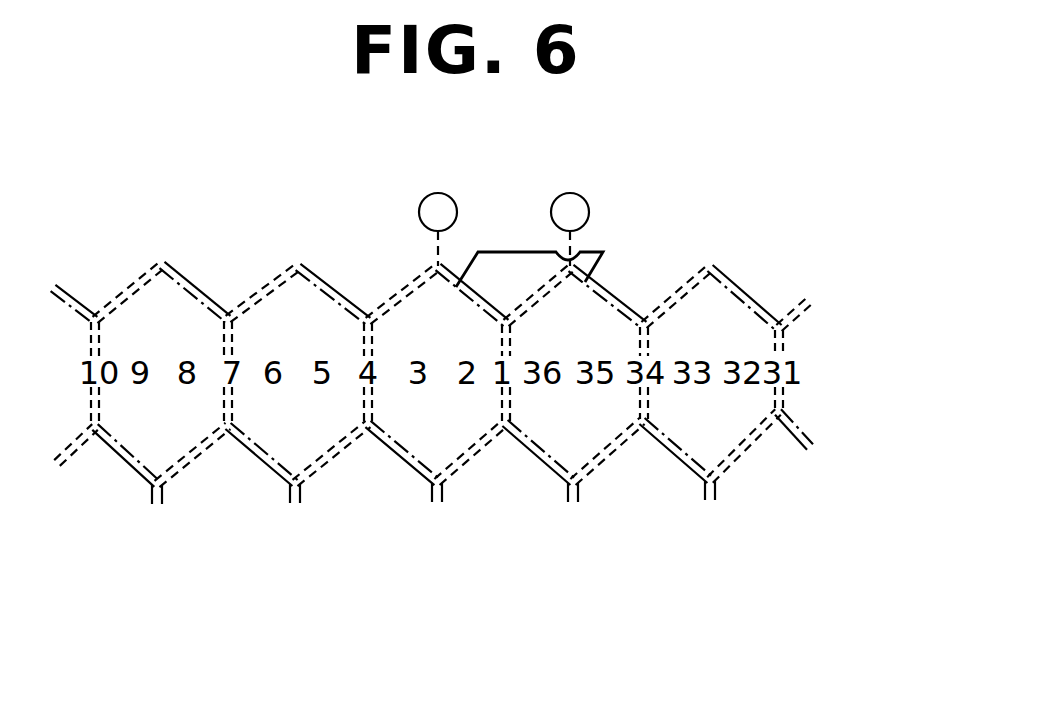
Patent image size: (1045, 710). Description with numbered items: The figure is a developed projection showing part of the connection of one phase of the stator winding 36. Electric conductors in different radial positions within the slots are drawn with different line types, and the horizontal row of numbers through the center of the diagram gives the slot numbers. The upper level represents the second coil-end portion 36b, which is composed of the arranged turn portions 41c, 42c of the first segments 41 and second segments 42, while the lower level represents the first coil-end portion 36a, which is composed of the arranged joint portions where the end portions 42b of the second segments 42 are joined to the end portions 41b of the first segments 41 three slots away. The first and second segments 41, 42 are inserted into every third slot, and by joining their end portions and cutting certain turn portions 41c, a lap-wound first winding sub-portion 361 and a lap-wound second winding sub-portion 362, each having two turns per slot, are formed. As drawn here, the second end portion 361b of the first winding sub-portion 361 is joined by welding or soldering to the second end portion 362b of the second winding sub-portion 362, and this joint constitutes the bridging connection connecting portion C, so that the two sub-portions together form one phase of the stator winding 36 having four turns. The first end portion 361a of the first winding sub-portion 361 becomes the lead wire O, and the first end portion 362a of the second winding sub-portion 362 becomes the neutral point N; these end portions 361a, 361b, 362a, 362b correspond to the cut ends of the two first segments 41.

The first segment 41 is at (130, 282).
The second segment 42 is at (200, 280).
The end portion of the first segment 41b is at (165, 491).
The end portion of the second segment 42b is at (248, 527).
The turn portion of the first segment 41c is at (703, 268).
The turn portion of the second segment 42c is at (735, 279).
The stator winding 36 is at (678, 535).
The first coil-end portion 36a is at (821, 412).
The second coil-end portion 36b is at (821, 253).
The first winding sub-portion 361 is at (592, 478).
The second winding sub-portion 362 is at (466, 468).
The first end portion of the first winding sub-portion 361a is at (573, 246).
The first end portion of the second winding sub-portion 362a is at (435, 256).
The second end portion of the first winding sub-portion 361b is at (603, 297).
The second end portion of the second winding sub-portion 362b is at (470, 298).
The bridging connection connecting portion C is at (522, 252).
The neutral point N is at (438, 212).
The lead wire O is at (570, 212).